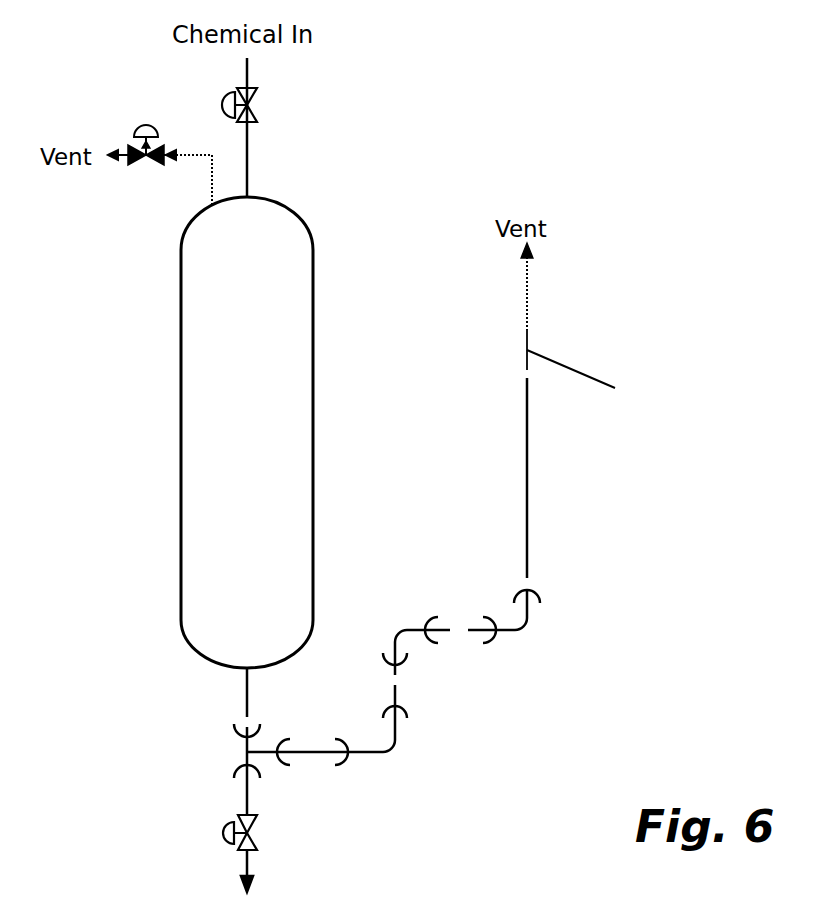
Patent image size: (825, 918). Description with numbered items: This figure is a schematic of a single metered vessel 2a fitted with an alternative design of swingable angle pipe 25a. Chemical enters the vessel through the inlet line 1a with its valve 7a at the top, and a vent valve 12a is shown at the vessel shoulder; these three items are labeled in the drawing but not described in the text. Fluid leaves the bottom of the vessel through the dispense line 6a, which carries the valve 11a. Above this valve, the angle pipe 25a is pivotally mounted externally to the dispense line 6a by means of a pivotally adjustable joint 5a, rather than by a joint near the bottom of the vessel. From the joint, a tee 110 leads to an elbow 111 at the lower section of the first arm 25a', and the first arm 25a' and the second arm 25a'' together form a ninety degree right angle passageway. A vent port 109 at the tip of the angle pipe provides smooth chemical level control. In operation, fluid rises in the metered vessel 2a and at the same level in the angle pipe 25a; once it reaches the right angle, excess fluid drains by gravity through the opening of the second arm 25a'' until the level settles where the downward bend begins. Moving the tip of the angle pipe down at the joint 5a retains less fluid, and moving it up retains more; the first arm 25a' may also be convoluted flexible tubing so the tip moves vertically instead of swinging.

The inlet pipe 1a is at (267, 127).
The inlet valve 7a is at (259, 105).
The metered vessel 2a is at (159, 327).
The vent valve 12a is at (160, 165).
The dispense line 6a is at (227, 741).
The pivotally adjustable joint 5a is at (226, 759).
The tee 110 is at (316, 773).
The elbow 111 is at (422, 706).
The angle pipe 25a is at (474, 469).
The first arm 25a' is at (474, 375).
The second arm 25a'' is at (579, 406).
The vent port 109 is at (532, 197).
The valve 11a is at (264, 853).